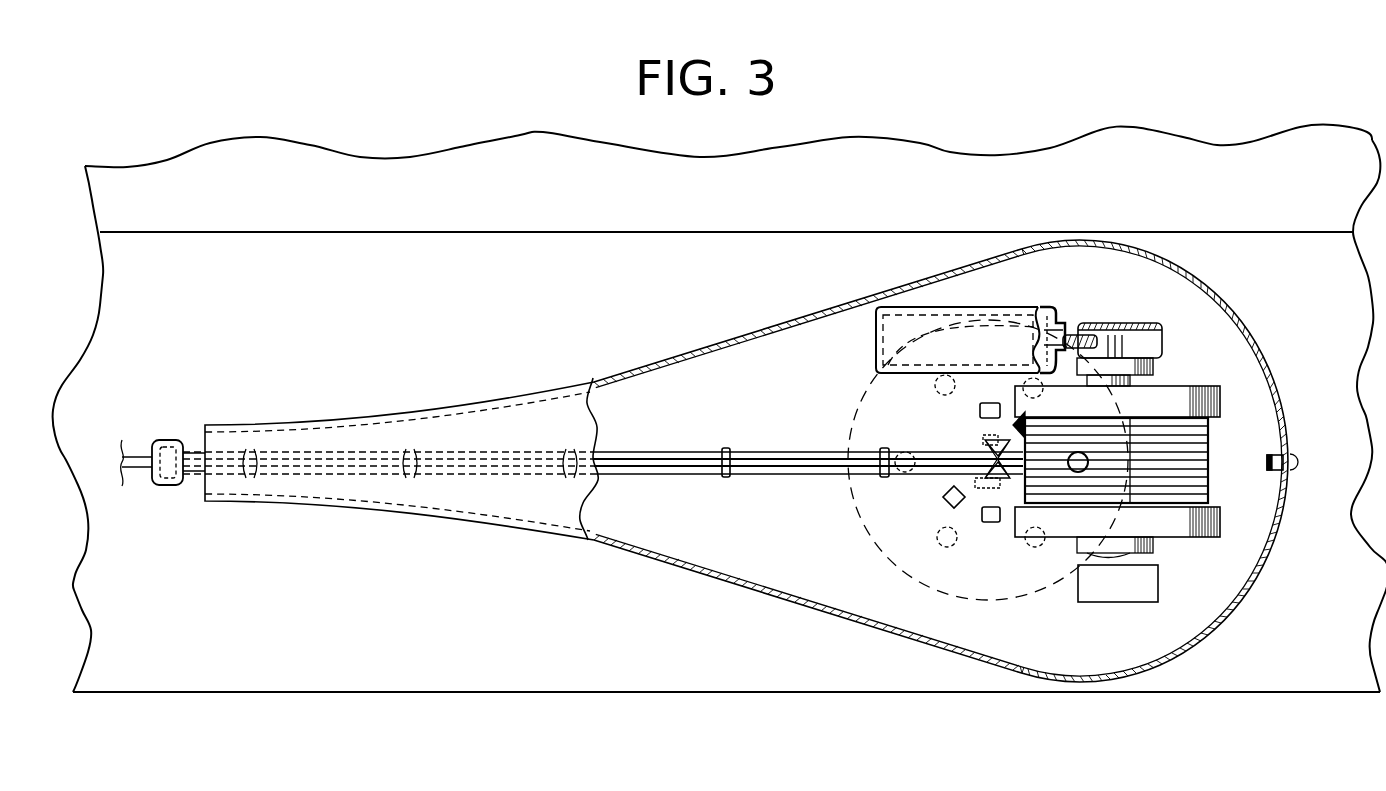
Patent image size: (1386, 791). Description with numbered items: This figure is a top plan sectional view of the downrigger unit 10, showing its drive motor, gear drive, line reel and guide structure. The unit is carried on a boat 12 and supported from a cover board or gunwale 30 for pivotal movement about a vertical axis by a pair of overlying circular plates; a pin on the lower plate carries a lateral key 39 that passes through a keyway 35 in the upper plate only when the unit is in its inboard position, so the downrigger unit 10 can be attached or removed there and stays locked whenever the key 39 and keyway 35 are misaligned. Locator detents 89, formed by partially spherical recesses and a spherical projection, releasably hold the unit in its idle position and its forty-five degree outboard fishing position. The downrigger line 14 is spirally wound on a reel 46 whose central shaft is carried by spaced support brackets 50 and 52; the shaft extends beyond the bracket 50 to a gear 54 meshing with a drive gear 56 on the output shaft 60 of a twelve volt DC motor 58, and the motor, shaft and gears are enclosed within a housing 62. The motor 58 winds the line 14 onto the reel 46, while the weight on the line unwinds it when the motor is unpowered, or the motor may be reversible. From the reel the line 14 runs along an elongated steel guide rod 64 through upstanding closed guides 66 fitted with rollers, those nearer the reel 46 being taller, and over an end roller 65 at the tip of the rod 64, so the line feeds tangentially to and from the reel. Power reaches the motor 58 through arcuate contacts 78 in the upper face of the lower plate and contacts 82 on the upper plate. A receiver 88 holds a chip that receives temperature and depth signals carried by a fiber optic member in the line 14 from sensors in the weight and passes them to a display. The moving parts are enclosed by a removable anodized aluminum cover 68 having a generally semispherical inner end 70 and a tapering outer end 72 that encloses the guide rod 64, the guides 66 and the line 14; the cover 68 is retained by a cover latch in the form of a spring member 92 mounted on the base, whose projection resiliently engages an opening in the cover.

The downrigger unit 10 is at (689, 573).
The bottom surface 12 is at (357, 691).
The downrigger line 14 is at (135, 458).
The cover board 30 is at (462, 665).
The keyway 35 is at (975, 472).
The lateral key 39 is at (990, 497).
The reel 46 is at (1212, 400).
The support bracket 50 is at (1163, 367).
The support bracket 52 is at (1160, 540).
The gear 54 is at (1140, 333).
The drive gear 56 is at (1082, 345).
The DC motor 58 is at (1040, 340).
The output shaft 60 is at (1050, 340).
The housing 62 is at (876, 330).
The guide rod 64 is at (647, 478).
The end roller 65 is at (170, 487).
The guides 66 is at (726, 448).
The cover 68 is at (766, 595).
The inner end of cover 70 is at (956, 461).
The tapering outer end of cover 72 is at (337, 503).
The arcuate contacts 78 is at (993, 523).
The contacts 82 is at (948, 497).
The receiver 88 is at (1112, 602).
The locator detents 89 is at (937, 538).
The spring member 92 is at (1270, 455).